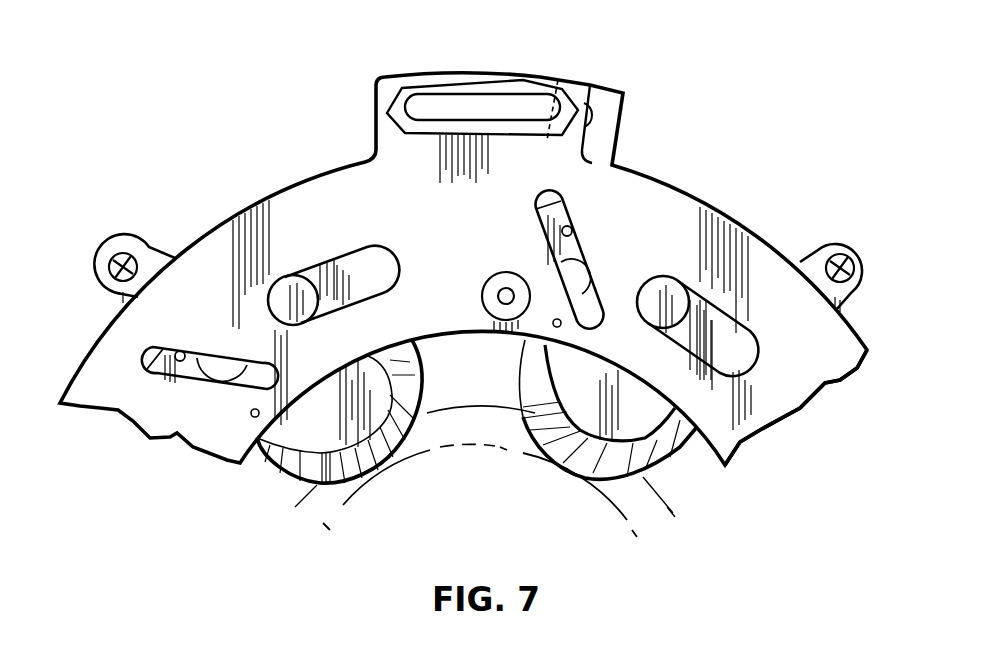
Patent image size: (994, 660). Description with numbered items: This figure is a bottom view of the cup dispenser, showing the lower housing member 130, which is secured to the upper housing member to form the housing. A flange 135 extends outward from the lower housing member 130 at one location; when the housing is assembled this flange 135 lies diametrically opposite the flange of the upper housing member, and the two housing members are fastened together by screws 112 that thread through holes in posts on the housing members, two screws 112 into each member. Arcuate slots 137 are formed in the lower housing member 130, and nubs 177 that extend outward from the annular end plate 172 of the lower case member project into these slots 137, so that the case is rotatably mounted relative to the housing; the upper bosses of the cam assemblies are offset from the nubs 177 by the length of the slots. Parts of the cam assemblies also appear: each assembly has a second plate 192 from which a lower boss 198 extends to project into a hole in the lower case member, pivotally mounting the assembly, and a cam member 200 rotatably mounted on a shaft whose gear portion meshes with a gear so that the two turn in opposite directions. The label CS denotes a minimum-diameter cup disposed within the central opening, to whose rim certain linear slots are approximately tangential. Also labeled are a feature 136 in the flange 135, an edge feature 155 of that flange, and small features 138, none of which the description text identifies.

The lower housing member 130 is at (703, 192).
The flange 135 is at (490, 70).
The slot in tab 136 is at (432, 108).
The flange 155 is at (624, 93).
The screws 112 is at (122, 262).
The arcuate slots 137 is at (361, 249).
The nubs 177 is at (288, 296).
The hole 138 is at (181, 352).
The lower boss 198 is at (213, 378).
The second plate 192 is at (293, 432).
The minimum diameter cup CS is at (467, 406).
The cam member 200 is at (381, 466).
The end plate 172 is at (740, 362).